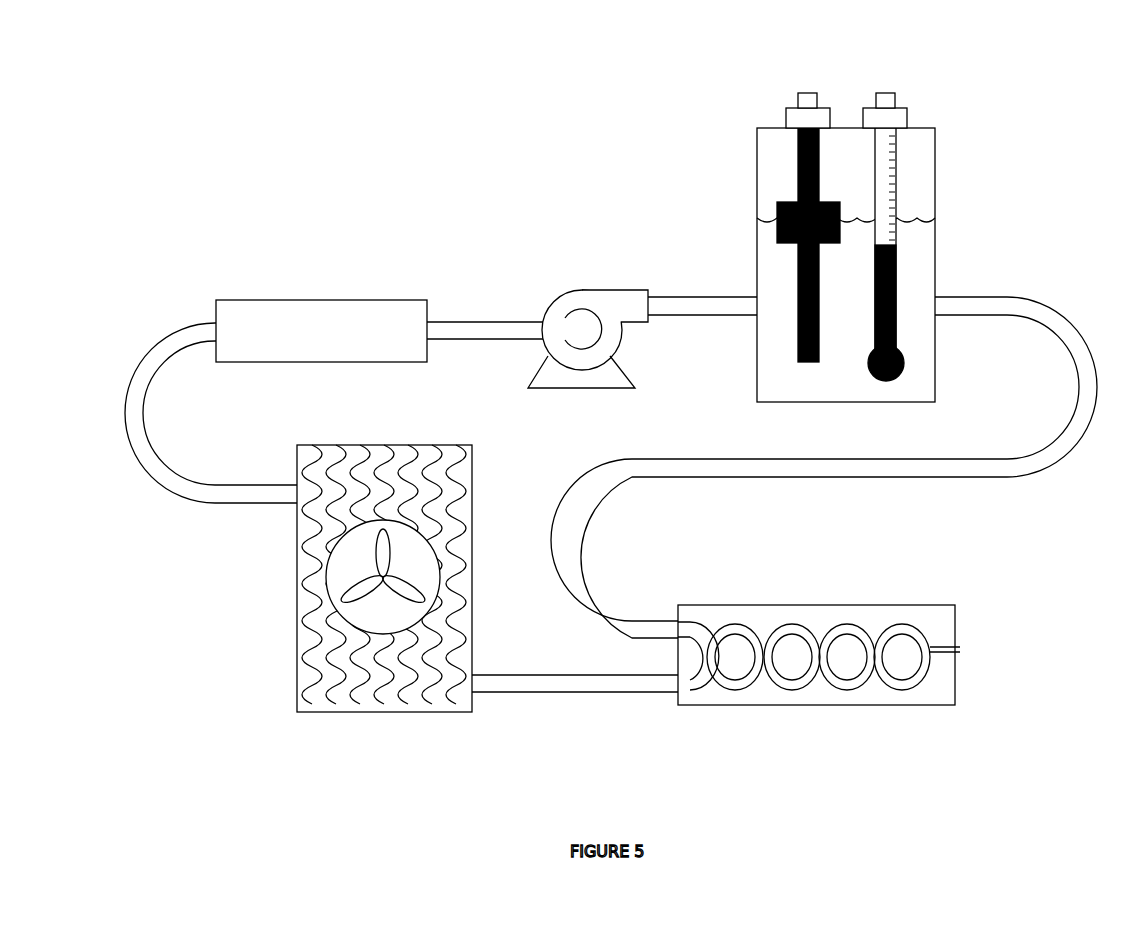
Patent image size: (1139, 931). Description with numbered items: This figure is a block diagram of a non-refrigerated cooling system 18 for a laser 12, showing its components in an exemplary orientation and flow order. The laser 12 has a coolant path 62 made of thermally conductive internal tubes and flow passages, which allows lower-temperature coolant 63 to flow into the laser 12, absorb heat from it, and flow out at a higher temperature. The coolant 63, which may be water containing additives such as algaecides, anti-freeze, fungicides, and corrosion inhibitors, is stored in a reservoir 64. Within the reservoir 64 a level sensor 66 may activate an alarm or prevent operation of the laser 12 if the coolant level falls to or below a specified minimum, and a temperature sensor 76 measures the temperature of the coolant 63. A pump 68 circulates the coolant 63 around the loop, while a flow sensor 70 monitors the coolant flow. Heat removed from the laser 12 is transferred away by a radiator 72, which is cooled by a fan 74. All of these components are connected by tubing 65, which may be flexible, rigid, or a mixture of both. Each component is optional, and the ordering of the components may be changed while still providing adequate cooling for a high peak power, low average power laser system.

The cooling system 18 is at (239, 118).
The laser 12 is at (879, 705).
The coolant path 62 is at (956, 649).
The coolant 63 is at (920, 280).
The reservoir 64 is at (935, 186).
The tubing 65 is at (476, 322).
The level sensor 66 is at (795, 118).
The pump 68 is at (583, 290).
The flow sensor 70 is at (332, 312).
The radiator 72 is at (297, 638).
The fan 74 is at (395, 622).
The temperature sensor 76 is at (897, 118).